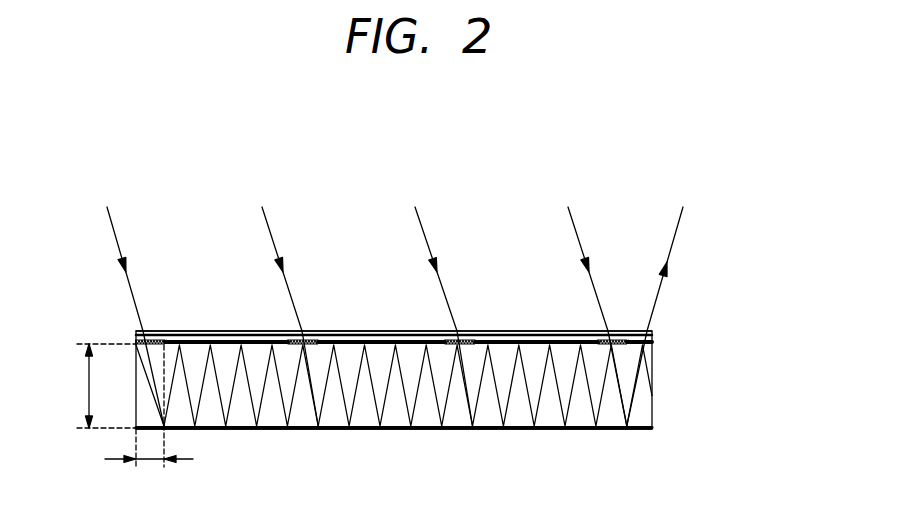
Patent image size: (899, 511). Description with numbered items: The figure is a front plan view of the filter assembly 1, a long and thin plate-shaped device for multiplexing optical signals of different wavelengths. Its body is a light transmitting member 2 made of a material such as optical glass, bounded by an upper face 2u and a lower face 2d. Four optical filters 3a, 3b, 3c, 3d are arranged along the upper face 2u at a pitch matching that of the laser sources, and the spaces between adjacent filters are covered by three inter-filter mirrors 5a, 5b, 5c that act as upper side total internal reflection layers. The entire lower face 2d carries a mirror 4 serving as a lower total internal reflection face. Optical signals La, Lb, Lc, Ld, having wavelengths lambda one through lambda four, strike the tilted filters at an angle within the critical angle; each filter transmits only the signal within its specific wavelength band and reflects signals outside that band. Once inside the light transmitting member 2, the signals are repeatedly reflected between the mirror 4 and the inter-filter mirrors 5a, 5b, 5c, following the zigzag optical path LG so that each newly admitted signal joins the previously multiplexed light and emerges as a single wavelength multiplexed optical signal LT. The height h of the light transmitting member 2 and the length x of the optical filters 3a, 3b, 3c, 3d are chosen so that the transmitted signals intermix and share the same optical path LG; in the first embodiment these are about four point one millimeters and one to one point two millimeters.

The filter assembly 1 is at (348, 166).
The light transmitting member 2 is at (653, 362).
The upper face 2u is at (633, 331).
The lower face 2d is at (610, 430).
The first optical filter 3a is at (135, 339).
The second optical filter 3b is at (294, 340).
The third optical filter 3c is at (452, 340).
The fourth optical filter 3d is at (608, 340).
The mirror 4 is at (427, 430).
The inter-filter mirror 5a is at (218, 341).
The inter-filter mirror 5b is at (375, 341).
The inter-filter mirror 5c is at (530, 341).
The optical path LG is at (378, 396).
The optical signal La is at (115, 233).
The optical signal Lb is at (269, 233).
The optical signal Lc is at (422, 233).
The optical signal Ld is at (575, 233).
The wavelength multiplexed optical signal LT is at (675, 233).
The height of the light transmitting member h is at (102, 386).
The length of the optical filters x is at (149, 415).